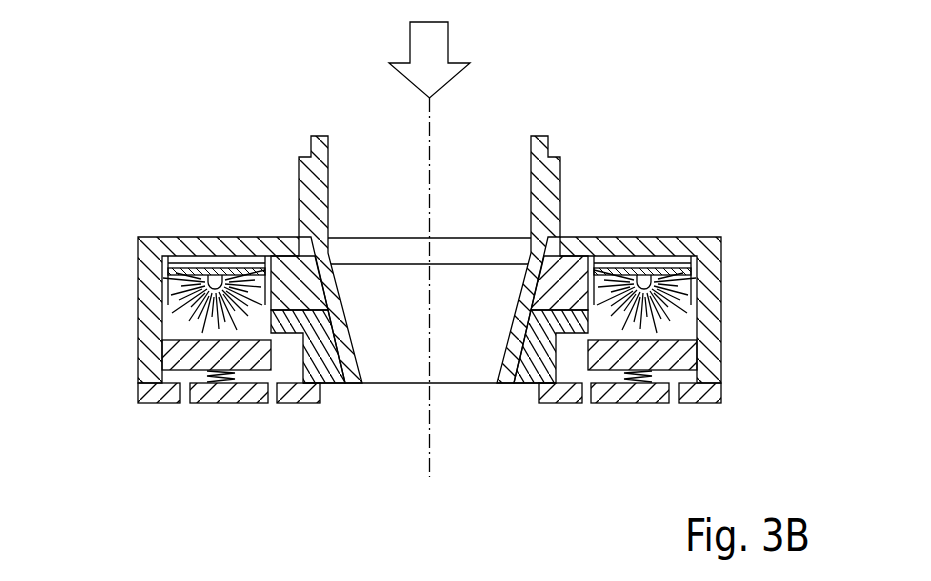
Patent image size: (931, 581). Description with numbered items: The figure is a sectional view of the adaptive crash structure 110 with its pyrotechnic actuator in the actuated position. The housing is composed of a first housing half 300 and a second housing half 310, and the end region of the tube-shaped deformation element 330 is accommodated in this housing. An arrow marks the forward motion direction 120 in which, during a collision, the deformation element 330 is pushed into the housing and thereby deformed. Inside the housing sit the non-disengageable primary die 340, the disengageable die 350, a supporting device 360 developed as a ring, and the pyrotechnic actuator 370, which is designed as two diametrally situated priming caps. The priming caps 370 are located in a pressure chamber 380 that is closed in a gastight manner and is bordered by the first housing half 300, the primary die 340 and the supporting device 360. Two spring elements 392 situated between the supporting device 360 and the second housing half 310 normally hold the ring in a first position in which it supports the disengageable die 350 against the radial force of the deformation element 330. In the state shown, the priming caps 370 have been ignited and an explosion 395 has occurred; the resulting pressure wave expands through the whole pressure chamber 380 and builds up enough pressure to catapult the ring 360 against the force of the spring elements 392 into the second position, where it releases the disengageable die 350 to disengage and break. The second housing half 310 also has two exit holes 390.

The crash structure 110 is at (122, 146).
The forward motion direction 120 is at (410, 42).
The first housing half 300 is at (648, 245).
The second housing half 310 is at (633, 392).
The deformation element 330 is at (542, 159).
The primary die 340 is at (563, 283).
The disengageable die 350 is at (530, 385).
The supporting device 360 is at (190, 355).
The pyrotechnic actuator 370 is at (214, 274).
The pressure chamber 380 is at (190, 325).
The exit holes 390 is at (676, 393).
The spring elements 392 is at (214, 374).
The explosion 395 is at (693, 282).